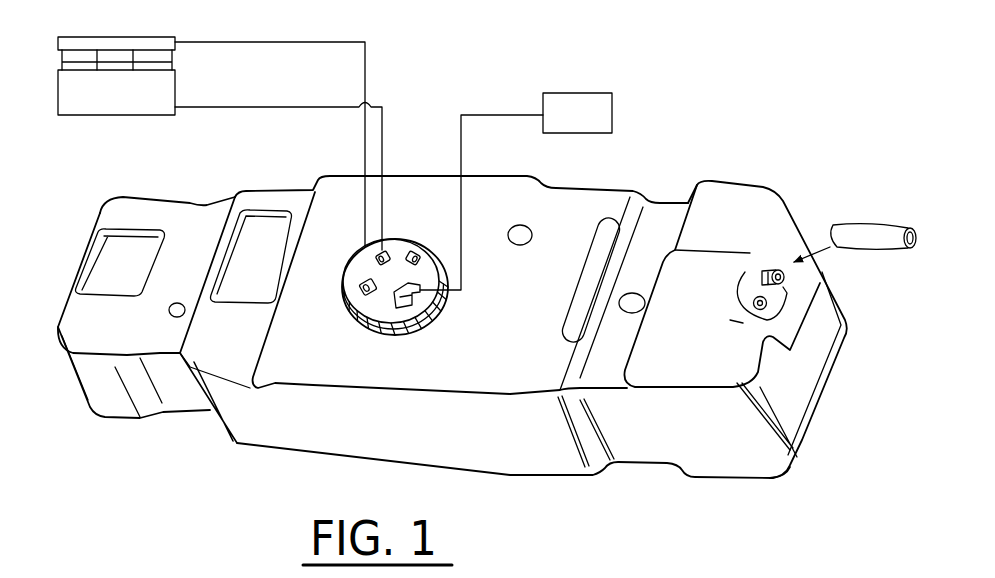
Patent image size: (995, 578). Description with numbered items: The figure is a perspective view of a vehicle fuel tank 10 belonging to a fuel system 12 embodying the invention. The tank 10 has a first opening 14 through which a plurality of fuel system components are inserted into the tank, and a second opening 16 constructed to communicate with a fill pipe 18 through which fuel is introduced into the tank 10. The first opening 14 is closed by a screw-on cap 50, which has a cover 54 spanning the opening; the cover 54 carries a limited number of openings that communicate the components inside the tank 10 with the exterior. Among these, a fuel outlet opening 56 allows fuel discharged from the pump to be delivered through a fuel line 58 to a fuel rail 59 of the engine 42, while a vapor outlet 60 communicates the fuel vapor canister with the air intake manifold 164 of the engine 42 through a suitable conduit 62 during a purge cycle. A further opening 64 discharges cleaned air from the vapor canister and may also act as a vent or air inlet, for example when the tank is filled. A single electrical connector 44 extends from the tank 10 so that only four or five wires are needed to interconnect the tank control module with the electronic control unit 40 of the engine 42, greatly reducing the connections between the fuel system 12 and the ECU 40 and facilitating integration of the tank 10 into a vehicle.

The fuel tank 10 is at (276, 450).
The fuel system 12 is at (440, 106).
The first opening 14 is at (395, 286).
The second opening 16 is at (770, 337).
The fill pipe 18 is at (857, 217).
The electronic control unit (ECU) 40 is at (613, 112).
The engine 42 is at (130, 114).
The electrical connector 44 is at (408, 303).
The screw-on cap 50 is at (422, 336).
The cover 54 is at (385, 308).
The fuel outlet opening 56 is at (363, 291).
The fuel line 58 is at (268, 40).
The fuel rail 59 is at (175, 38).
The vapor outlet 60 is at (378, 255).
The conduit 62 is at (270, 108).
The opening 64 is at (418, 252).
The air intake manifold 164 is at (173, 63).